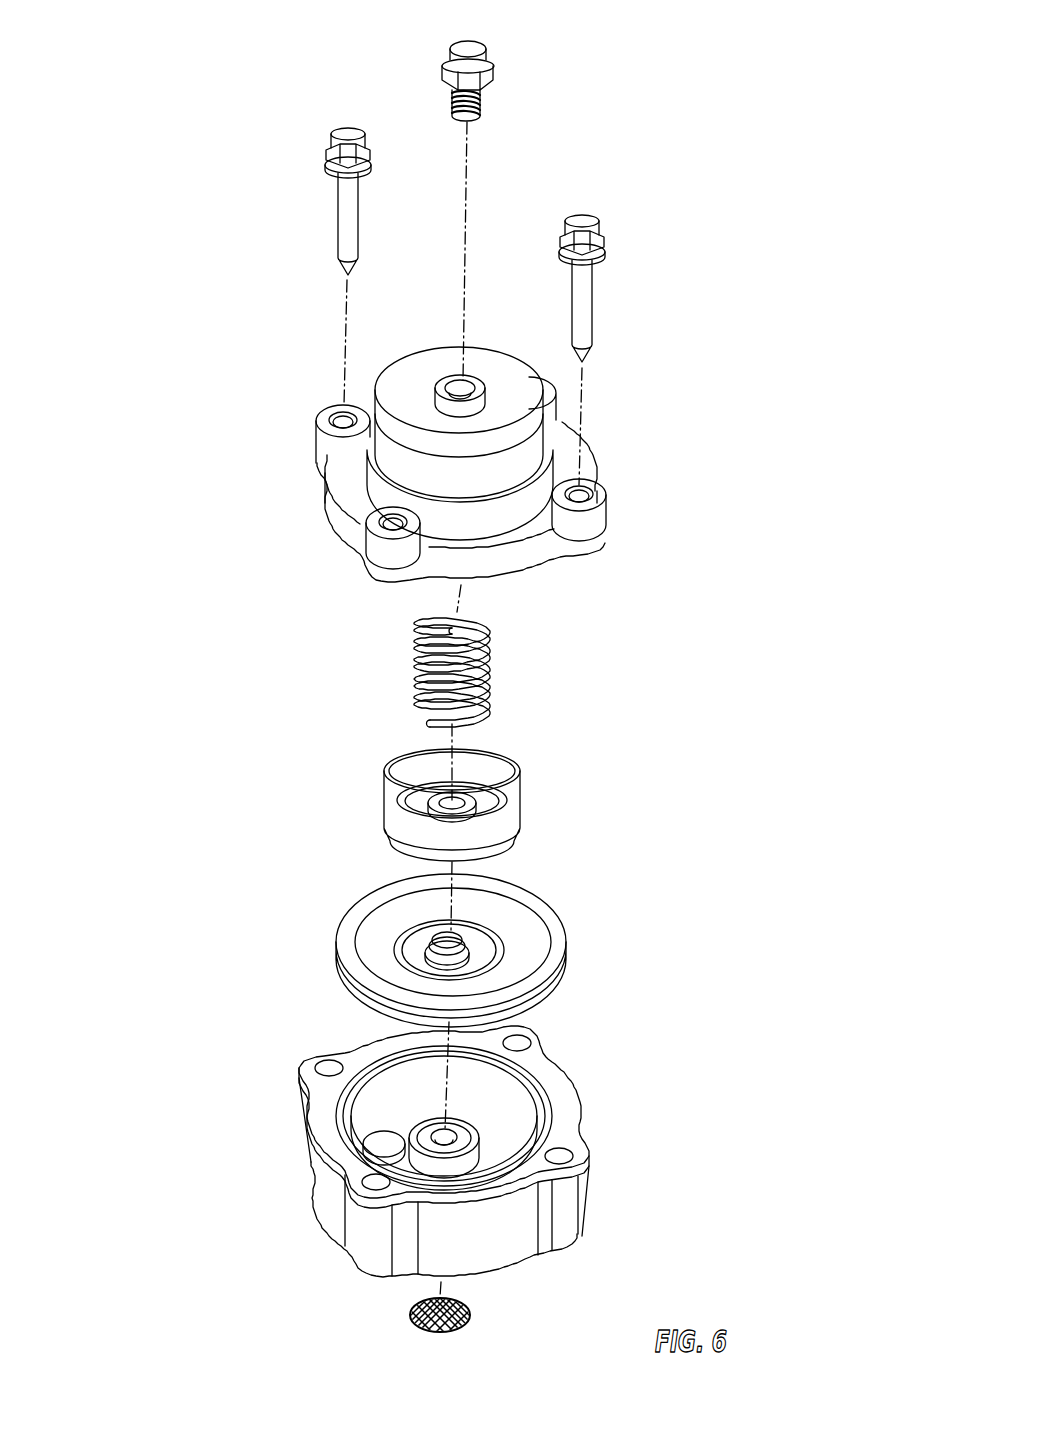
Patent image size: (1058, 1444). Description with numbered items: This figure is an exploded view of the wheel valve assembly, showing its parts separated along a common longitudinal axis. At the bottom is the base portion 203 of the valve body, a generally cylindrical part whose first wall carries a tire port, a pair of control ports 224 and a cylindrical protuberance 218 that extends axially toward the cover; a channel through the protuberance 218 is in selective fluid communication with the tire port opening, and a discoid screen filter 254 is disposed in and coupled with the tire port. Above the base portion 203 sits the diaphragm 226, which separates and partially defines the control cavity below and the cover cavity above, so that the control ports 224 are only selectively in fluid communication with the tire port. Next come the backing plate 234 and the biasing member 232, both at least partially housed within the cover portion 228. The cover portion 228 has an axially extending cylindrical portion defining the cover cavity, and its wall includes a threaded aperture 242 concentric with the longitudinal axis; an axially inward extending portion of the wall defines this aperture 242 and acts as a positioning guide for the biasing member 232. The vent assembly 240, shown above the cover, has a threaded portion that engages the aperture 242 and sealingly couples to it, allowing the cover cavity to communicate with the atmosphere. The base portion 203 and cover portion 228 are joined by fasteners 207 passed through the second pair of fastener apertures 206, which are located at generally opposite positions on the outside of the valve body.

The base portion 203 is at (454, 1151).
The second pair of fastener apertures 206 is at (326, 410).
The fasteners 207 is at (330, 143).
The protuberance 218 is at (465, 1130).
The control ports 224 is at (376, 1145).
The diaphragm 226 is at (483, 952).
The cover portion 228 is at (462, 445).
The biasing member 232 is at (519, 646).
The backing plate 234 is at (536, 805).
The vent assembly 240 is at (526, 64).
The aperture 242 is at (447, 387).
The discoid screen filter 254 is at (488, 1318).